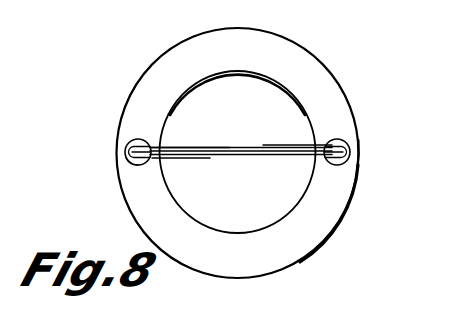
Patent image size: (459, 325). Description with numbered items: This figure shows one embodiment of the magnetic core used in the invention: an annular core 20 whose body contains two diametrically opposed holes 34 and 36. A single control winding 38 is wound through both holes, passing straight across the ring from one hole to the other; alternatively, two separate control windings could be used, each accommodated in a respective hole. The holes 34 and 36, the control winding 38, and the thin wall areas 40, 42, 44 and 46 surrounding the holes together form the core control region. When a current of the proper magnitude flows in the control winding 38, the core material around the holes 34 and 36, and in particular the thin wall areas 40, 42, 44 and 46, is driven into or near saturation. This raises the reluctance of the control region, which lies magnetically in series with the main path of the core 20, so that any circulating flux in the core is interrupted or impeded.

The annular core 20 is at (342, 88).
The hole 34 is at (347, 145).
The hole 36 is at (130, 161).
The control winding 38 is at (247, 146).
The thin wall area 40 is at (156, 146).
The thin wall area 42 is at (318, 163).
The thin wall area 44 is at (124, 150).
The thin wall area 46 is at (357, 156).